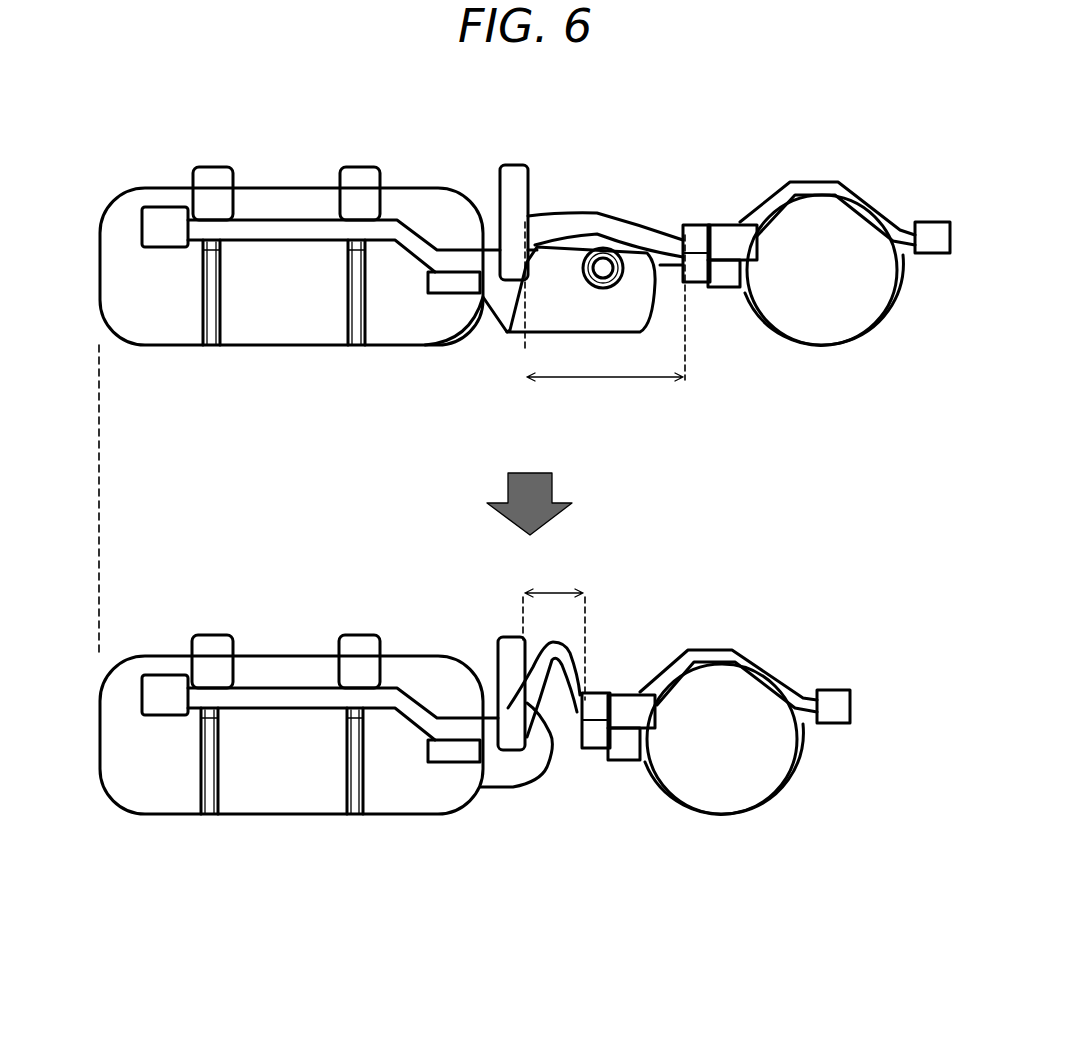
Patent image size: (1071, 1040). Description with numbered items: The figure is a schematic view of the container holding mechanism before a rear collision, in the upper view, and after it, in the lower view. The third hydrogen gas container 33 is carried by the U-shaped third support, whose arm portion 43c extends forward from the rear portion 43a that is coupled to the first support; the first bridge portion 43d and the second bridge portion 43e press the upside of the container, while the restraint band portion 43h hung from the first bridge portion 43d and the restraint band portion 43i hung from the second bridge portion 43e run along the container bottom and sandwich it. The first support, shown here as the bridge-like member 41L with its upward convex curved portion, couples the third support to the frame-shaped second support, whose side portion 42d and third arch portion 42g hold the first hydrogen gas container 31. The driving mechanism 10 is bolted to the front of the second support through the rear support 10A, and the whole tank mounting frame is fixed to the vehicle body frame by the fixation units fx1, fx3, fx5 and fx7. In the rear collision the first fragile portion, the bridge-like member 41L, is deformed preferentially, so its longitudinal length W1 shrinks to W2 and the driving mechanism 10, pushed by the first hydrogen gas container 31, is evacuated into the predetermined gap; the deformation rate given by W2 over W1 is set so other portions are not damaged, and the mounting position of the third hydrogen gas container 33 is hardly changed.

The third hydrogen gas container 33 is at (117, 275).
The first hydrogen gas container 31 is at (852, 303).
The driving mechanism 10 is at (515, 318).
The rear support 10A is at (662, 265).
The bridge-like member 41L is at (612, 220).
The side portion 42d is at (840, 188).
The third arch portion 42g is at (842, 353).
The rear portion 43a is at (513, 172).
The arm portion 43c is at (272, 228).
The first bridge portion 43d is at (215, 178).
The second bridge portion 43e is at (360, 178).
The restraint band portion 43h is at (210, 340).
The restraint band portion 43i is at (352, 340).
The fixation unit fx1 is at (930, 238).
The fixation unit fx3 is at (740, 222).
The fixation unit fx5 is at (455, 287).
The fixation unit fx7 is at (160, 214).
The length of first fragile portion before collision W1 is at (604, 301).
The length of first fragile portion after collision W2 is at (553, 603).